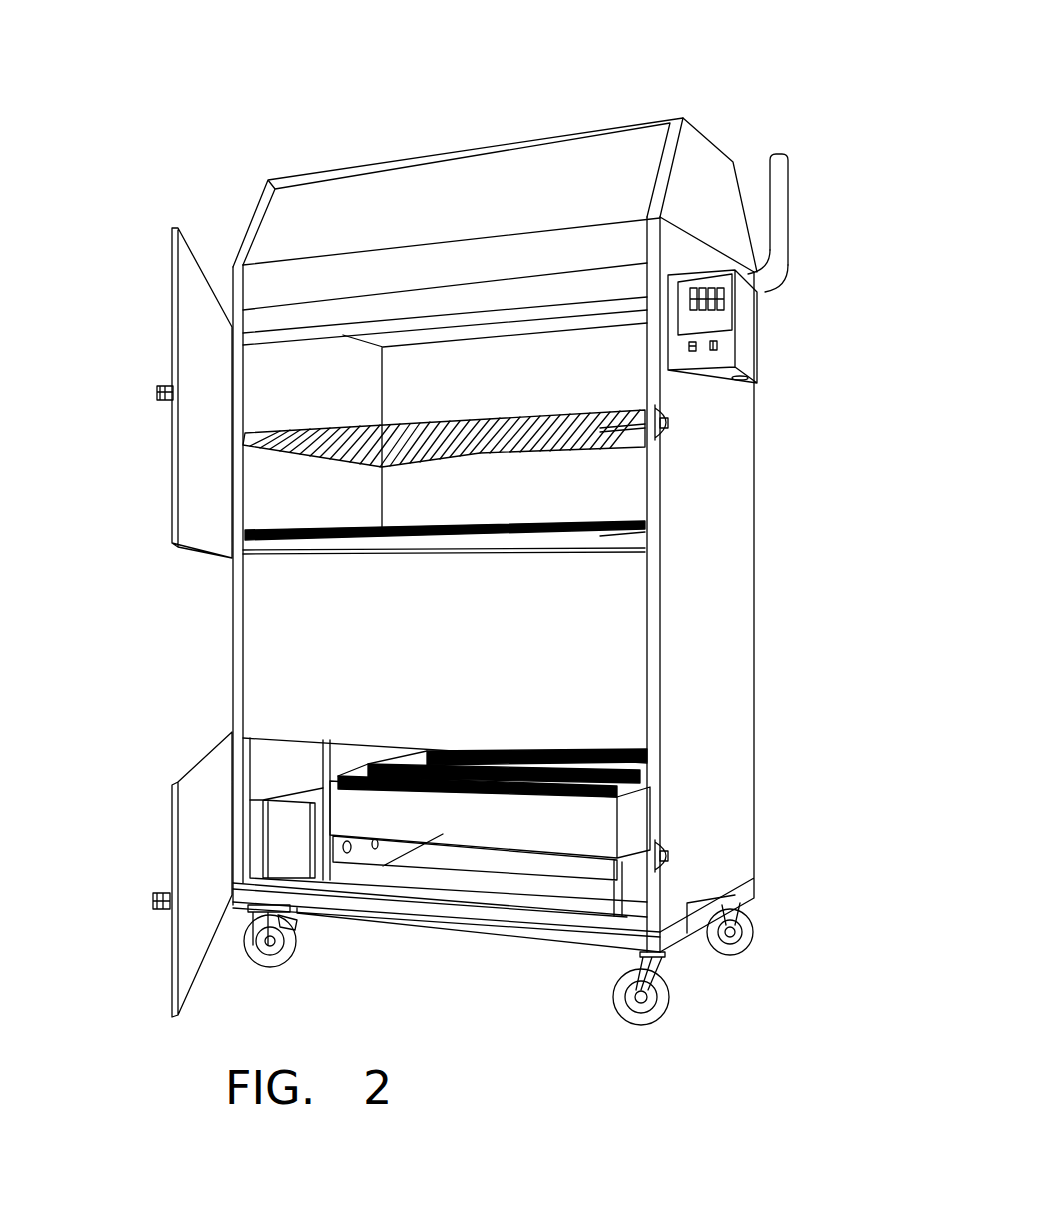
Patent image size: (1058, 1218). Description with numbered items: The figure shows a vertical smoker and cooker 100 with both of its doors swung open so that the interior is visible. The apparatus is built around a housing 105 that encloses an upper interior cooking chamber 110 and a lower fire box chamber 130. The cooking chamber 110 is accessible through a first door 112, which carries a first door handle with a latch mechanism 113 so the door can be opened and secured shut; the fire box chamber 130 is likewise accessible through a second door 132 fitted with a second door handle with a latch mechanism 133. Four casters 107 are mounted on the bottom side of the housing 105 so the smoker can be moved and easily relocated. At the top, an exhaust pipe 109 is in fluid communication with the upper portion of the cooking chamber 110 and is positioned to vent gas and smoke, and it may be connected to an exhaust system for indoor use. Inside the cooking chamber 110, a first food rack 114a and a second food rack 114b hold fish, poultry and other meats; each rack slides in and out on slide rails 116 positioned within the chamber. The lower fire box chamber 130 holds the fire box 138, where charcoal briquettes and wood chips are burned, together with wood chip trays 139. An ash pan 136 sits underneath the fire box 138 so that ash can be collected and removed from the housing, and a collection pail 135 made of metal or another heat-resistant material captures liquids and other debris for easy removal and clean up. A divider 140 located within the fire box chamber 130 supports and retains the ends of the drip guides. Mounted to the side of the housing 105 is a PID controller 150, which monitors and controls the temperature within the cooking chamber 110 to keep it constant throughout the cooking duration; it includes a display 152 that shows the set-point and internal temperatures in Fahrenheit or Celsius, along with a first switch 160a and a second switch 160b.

The vertical smoker and cooker 100 is at (548, 100).
The housing 105 is at (691, 167).
The casters 107 is at (278, 973).
The exhaust pipe 109 is at (778, 190).
The cooking chamber 110 is at (255, 377).
The first door 112 is at (197, 312).
The first door handle with a latch mechanism 113 is at (165, 397).
The first food rack 114a is at (614, 538).
The second food rack 114b is at (633, 443).
The slide rails 116 is at (274, 447).
The fire box chamber 130 is at (279, 760).
The second door 132 is at (190, 955).
The second door handle with a latch mechanism 133 is at (165, 912).
The collection pail 135 is at (292, 830).
The ash pan 136 is at (622, 893).
The fire box 138 is at (608, 837).
The wood chip trays 139 is at (633, 757).
The divider 140 is at (348, 756).
The PID controller 150 is at (757, 313).
The display 152 is at (727, 332).
The first switch 160a is at (694, 352).
The second switch 160b is at (713, 350).